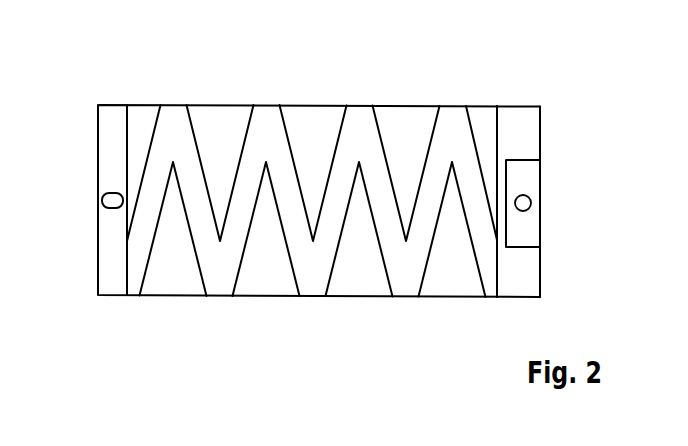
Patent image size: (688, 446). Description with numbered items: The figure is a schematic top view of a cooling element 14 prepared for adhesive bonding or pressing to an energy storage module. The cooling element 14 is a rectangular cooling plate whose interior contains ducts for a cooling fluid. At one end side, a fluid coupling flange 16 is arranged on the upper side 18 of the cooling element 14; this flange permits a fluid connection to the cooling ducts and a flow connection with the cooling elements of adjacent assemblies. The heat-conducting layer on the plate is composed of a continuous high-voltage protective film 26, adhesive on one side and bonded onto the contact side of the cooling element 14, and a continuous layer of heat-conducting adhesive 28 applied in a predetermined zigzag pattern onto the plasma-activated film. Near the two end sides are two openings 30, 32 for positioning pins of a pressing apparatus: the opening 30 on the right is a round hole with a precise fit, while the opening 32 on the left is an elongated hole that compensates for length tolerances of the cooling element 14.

The cooling element 14 is at (419, 83).
The fluid coupling flange 16 is at (530, 172).
The upper side 18 is at (530, 132).
The high-voltage protective film 26 is at (362, 285).
The heat-conducting adhesive 28 is at (408, 285).
The opening 30 is at (531, 203).
The opening 32 is at (112, 200).